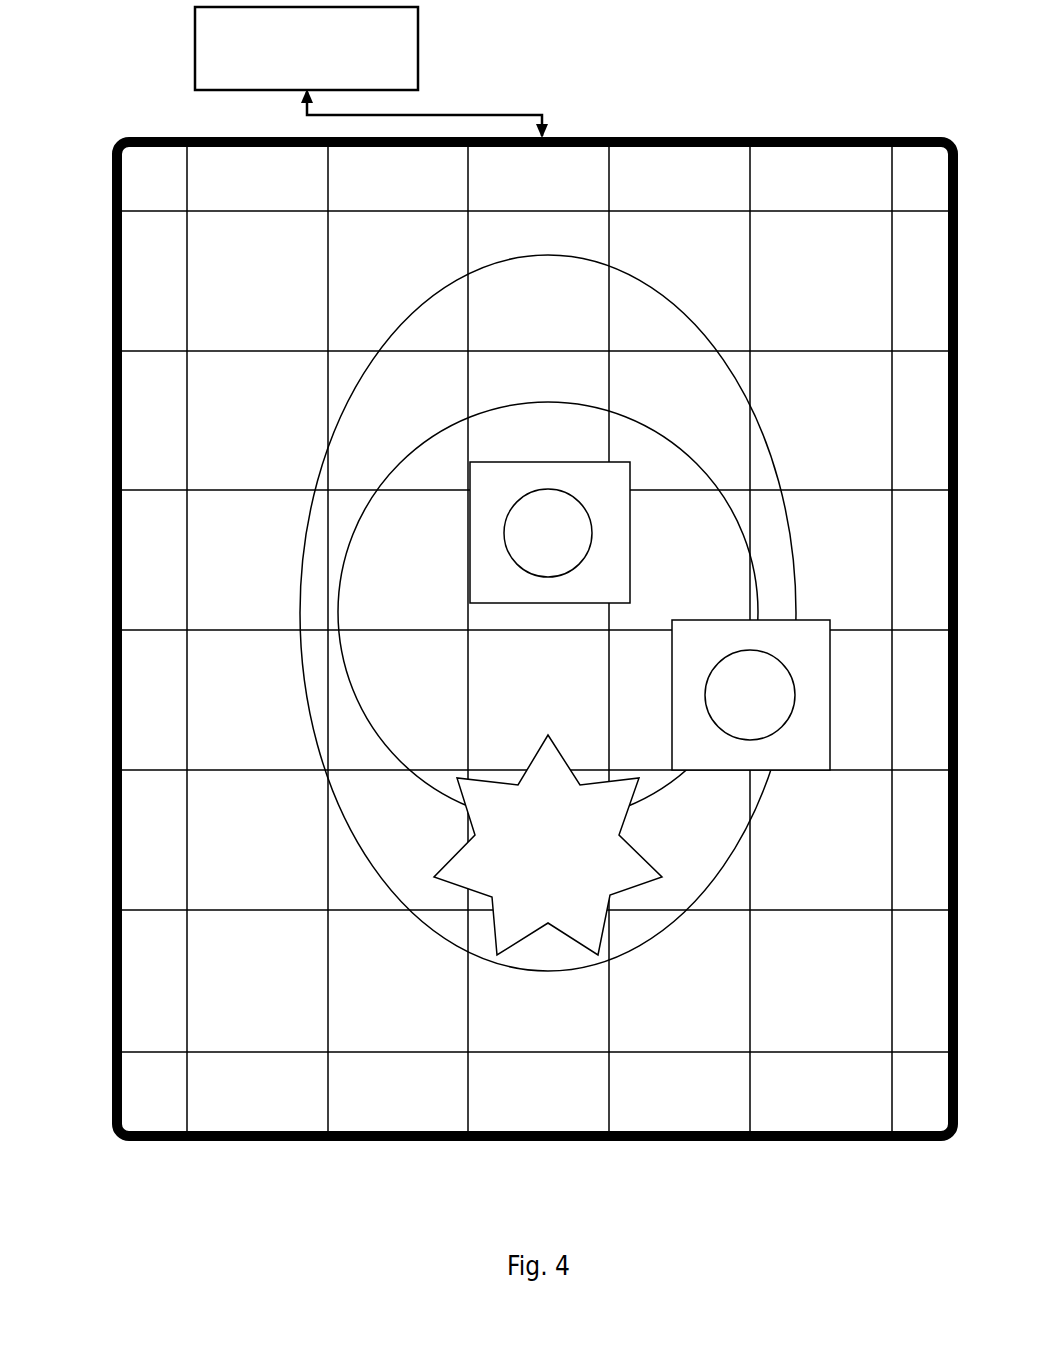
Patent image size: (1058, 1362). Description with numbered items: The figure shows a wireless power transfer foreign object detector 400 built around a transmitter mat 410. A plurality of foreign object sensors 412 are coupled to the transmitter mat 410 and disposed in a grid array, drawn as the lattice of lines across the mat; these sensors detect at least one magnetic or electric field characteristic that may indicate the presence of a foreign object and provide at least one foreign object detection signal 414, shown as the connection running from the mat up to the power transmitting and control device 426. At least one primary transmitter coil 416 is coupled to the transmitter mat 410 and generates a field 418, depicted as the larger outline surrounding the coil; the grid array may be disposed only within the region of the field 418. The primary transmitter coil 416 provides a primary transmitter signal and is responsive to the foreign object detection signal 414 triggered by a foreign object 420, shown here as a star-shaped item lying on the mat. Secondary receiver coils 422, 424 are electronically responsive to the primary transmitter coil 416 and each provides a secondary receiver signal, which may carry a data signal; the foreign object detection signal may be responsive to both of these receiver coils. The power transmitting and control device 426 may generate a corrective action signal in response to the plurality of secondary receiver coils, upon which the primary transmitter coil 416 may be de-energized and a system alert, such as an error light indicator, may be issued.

The wireless power transfer foreign object detector 400 is at (800, 107).
The transmitter mat 410 is at (840, 1145).
The foreign object sensors 412 is at (608, 1052).
The foreign object detection signal 414 is at (480, 114).
The primary transmitter coil 416 is at (386, 478).
The field 418 is at (366, 368).
The foreign object 420 is at (434, 877).
The secondary receiver coil 422 is at (504, 535).
The secondary receiver coil 424 is at (705, 697).
The power transmitting and control device 426 is at (196, 48).